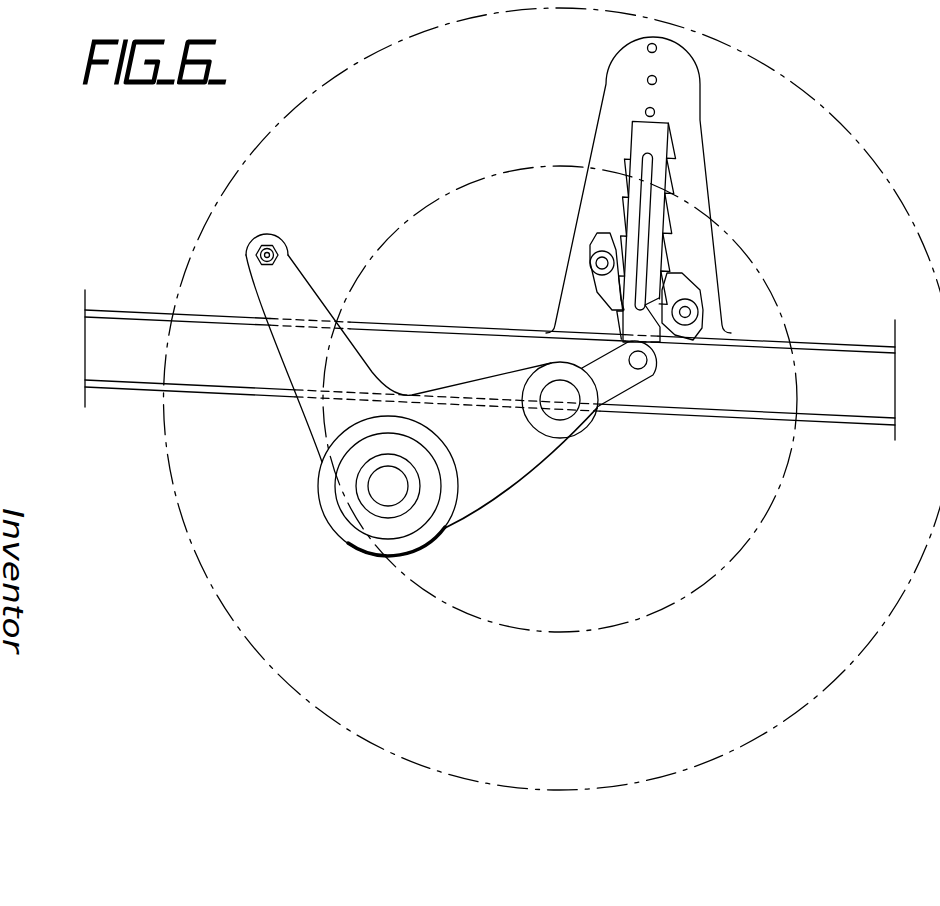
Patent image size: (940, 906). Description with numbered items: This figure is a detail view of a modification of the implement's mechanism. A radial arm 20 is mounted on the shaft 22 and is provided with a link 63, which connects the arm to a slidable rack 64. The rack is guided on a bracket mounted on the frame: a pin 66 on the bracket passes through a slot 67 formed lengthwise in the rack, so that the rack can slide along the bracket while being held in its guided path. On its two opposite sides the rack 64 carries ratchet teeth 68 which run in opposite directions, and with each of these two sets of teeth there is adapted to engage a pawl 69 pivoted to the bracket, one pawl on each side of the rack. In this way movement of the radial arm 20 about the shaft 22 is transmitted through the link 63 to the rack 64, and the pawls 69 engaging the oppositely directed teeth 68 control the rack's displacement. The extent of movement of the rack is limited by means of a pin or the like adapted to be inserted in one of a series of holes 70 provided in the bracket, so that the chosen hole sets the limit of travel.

The radial arm 20 is at (513, 470).
The shaft 22 is at (383, 500).
The link 63 is at (612, 387).
The slidable rack 64 is at (657, 258).
The pin 66 is at (664, 333).
The slot 67 is at (646, 224).
The ratchet teeth 68 is at (673, 188).
The pawl 69 is at (690, 278).
The holes 70 is at (655, 112).